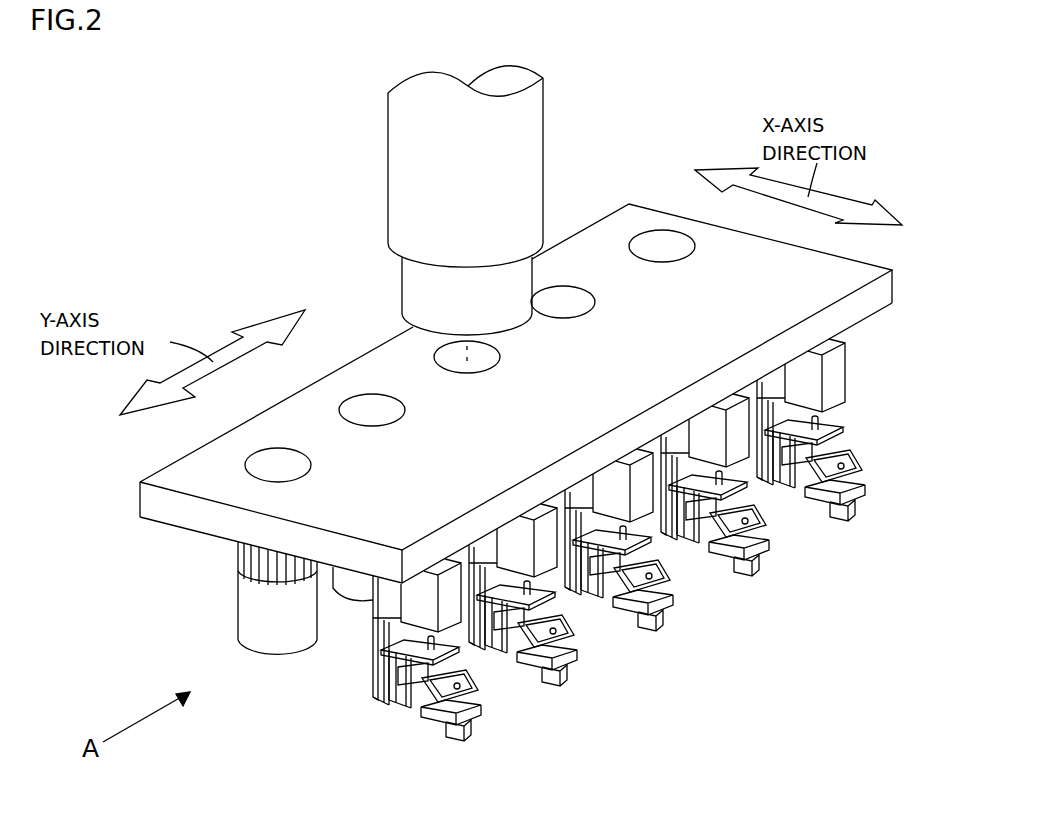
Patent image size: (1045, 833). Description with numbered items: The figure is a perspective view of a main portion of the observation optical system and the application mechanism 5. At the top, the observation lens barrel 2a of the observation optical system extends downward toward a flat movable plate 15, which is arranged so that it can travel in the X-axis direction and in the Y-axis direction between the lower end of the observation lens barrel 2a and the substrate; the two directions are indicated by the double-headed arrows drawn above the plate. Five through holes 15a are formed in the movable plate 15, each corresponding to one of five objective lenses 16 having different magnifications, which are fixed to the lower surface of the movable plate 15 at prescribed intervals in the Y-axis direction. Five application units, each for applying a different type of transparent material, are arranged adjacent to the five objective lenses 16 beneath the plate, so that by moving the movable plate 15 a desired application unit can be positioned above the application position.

The observation lens barrel 2a is at (402, 156).
The application mechanism 5 is at (893, 94).
The movable plate 15 is at (877, 294).
The through hole 15a is at (263, 466).
The objective lens 16 is at (256, 615).